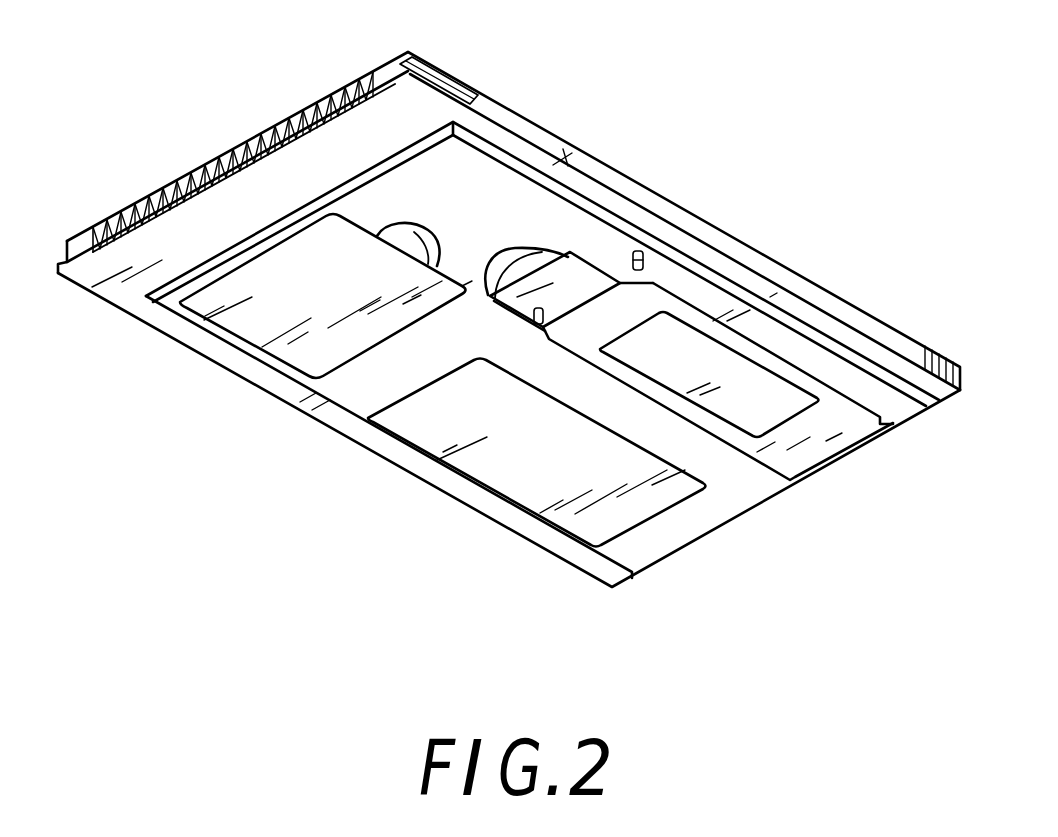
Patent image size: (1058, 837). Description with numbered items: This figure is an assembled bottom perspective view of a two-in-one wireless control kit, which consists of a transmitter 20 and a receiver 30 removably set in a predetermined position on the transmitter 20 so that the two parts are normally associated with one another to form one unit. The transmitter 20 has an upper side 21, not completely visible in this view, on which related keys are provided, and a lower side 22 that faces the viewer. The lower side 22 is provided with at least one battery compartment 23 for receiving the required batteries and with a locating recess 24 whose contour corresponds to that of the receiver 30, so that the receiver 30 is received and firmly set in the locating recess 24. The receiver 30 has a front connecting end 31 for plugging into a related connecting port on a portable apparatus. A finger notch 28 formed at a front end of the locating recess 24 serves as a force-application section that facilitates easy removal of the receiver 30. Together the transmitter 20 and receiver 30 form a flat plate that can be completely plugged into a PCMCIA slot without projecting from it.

The transmitter 20 is at (625, 173).
The upper side 21 is at (712, 222).
The lower side 22 is at (345, 392).
The battery compartment 23 is at (366, 230).
The locating recess 24 is at (838, 393).
The finger notch 28 is at (498, 262).
The receiver 30 is at (810, 447).
The front connecting end 31 is at (548, 278).